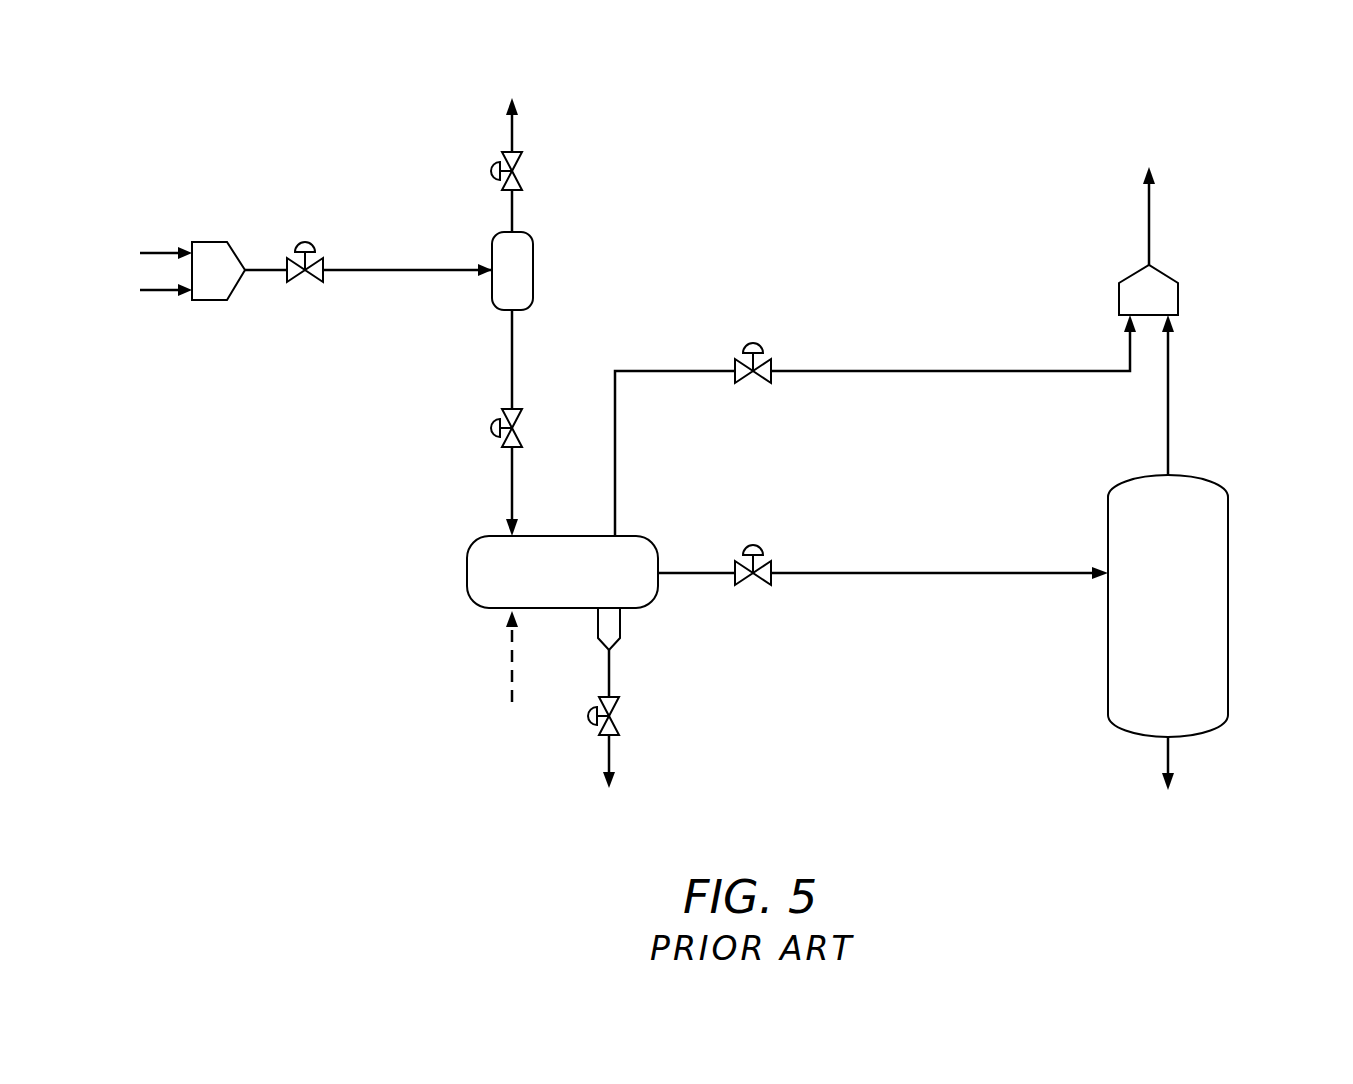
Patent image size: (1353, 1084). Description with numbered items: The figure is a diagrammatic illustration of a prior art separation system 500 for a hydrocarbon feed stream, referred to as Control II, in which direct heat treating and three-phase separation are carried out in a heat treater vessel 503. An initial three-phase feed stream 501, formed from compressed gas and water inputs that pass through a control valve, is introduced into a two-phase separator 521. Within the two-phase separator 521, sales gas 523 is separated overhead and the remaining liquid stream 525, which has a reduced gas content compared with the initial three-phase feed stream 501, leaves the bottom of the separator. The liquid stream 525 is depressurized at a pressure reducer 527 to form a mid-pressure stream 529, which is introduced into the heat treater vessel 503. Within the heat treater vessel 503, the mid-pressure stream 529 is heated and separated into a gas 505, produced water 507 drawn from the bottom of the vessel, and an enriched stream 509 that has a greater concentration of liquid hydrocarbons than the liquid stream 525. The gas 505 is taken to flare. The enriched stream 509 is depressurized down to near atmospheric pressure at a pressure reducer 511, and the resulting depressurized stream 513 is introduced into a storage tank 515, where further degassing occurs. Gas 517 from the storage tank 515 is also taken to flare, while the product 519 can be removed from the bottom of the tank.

The separation system 500 is at (1088, 77).
The initial three-phase feed stream 501 is at (413, 268).
The heat treater vessel 503 is at (468, 572).
The gas 505 is at (615, 453).
The produced water 507 is at (609, 672).
The enriched stream 509 is at (687, 572).
The pressure reducer 511 is at (770, 585).
The depressurized stream 513 is at (955, 572).
The storage tank 515 is at (1228, 652).
The gas 517 is at (1168, 393).
The product 519 is at (1170, 762).
The two-phase separator 521 is at (533, 260).
The sales gas 523 is at (512, 132).
The liquid stream 525 is at (512, 365).
The pressure reducer 527 is at (482, 426).
The mid-pressure stream 529 is at (512, 500).